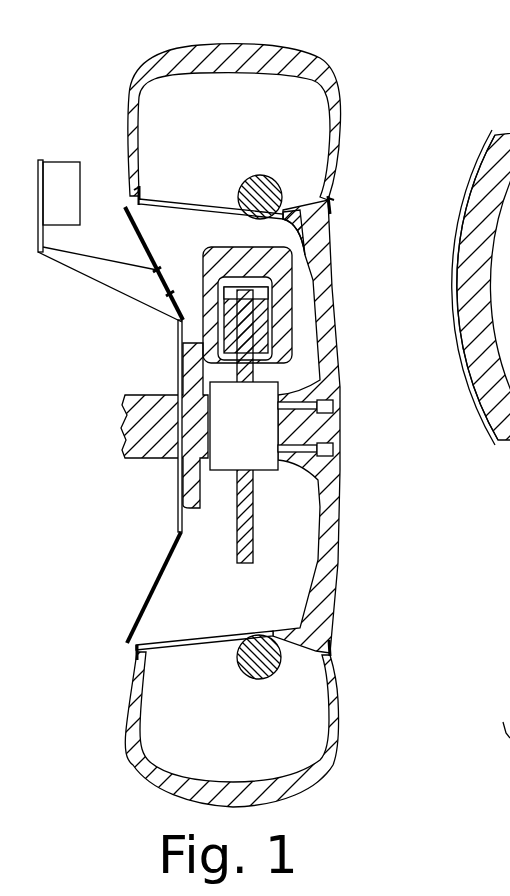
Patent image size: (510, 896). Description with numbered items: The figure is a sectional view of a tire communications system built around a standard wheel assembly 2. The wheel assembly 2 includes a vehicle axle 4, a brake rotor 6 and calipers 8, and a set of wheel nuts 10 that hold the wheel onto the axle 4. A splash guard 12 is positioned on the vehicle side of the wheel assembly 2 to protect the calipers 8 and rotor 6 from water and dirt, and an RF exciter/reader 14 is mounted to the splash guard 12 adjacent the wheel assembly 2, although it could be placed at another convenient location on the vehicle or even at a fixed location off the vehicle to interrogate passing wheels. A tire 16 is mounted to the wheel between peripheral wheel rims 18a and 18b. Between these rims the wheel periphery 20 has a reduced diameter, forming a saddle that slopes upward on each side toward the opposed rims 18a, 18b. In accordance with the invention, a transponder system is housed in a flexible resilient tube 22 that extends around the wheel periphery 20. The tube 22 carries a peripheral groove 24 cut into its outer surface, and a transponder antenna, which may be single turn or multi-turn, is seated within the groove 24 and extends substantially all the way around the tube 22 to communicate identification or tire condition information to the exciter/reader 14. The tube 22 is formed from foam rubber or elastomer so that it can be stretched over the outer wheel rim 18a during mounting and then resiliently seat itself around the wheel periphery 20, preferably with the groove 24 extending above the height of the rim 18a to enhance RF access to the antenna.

The wheel assembly 2 is at (347, 565).
The vehicle axle 4 is at (150, 395).
The brake rotor 6 is at (250, 528).
The calipers 8 is at (263, 327).
The wheel nuts 10 is at (333, 403).
The splash guard 12 is at (143, 607).
The RF exciter/reader 14 is at (55, 160).
The tire 16 is at (292, 56).
The outer wheel rim 18a is at (331, 200).
The wheel rim 18b is at (137, 190).
The wheel periphery 20 is at (227, 208).
The flexible resilient tube 22 is at (283, 188).
The peripheral groove 24 is at (261, 178).